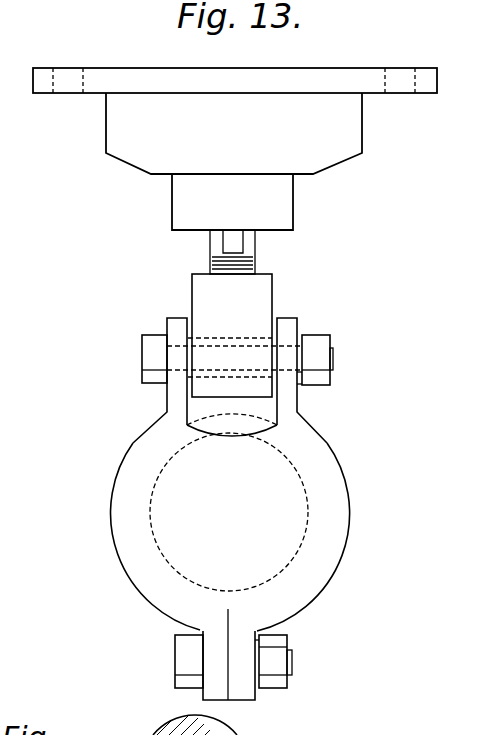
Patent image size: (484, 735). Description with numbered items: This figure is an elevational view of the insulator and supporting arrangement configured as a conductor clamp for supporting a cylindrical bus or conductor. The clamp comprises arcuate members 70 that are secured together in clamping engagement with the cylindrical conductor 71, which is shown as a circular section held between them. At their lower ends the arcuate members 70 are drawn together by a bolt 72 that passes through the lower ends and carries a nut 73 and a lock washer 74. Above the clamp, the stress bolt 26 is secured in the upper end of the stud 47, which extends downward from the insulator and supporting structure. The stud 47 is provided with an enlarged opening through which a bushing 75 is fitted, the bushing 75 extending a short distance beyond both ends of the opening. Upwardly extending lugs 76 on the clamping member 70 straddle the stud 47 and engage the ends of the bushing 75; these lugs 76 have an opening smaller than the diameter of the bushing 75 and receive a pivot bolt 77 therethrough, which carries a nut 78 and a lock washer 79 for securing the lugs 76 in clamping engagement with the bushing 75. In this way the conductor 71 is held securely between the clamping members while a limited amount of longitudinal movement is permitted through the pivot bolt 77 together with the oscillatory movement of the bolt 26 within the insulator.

The stress bolt 26 is at (217, 251).
The stud member 47 is at (208, 290).
The arcuate members 70 is at (330, 455).
The cylindrical conductor 71 is at (306, 500).
The bolt 72 is at (288, 666).
The nut 73 is at (270, 680).
The lock washer 74 is at (255, 690).
The bushing 75 is at (270, 338).
The lugs 76 is at (175, 322).
The pivot bolt 77 is at (332, 355).
The nut 78 is at (322, 378).
The lock washer 79 is at (301, 382).